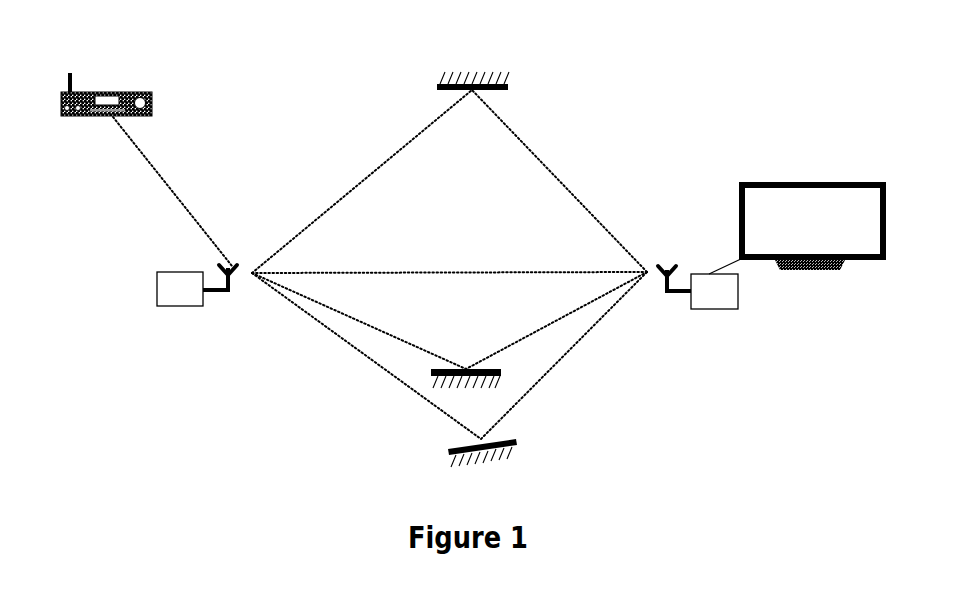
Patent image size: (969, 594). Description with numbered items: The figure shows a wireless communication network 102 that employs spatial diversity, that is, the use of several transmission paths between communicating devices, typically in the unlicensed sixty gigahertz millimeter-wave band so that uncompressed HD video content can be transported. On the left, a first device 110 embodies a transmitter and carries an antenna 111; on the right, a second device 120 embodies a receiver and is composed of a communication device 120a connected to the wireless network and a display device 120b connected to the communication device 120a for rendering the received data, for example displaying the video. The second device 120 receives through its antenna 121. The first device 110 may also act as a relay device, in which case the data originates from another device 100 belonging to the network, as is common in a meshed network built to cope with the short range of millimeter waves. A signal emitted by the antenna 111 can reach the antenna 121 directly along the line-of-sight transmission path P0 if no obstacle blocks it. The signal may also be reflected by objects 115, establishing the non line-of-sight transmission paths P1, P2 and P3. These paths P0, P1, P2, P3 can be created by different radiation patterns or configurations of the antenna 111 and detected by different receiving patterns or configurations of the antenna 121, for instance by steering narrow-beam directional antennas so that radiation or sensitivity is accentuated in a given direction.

The originator device 100 is at (118, 92).
The wireless communication network 102 is at (312, 85).
The first device 110 is at (157, 290).
The antenna of first device 111 is at (228, 296).
The objects 115 is at (480, 72).
The second device 120 is at (773, 262).
The communication device 120a is at (738, 293).
The display device 120b is at (775, 182).
The antenna of second device 121 is at (665, 268).
The line-of-sight transmission path P0 is at (497, 270).
The non line-of-sight transmission path P1 is at (388, 160).
The non line-of-sight transmission path P2 is at (530, 337).
The non line-of-sight transmission path P3 is at (380, 367).